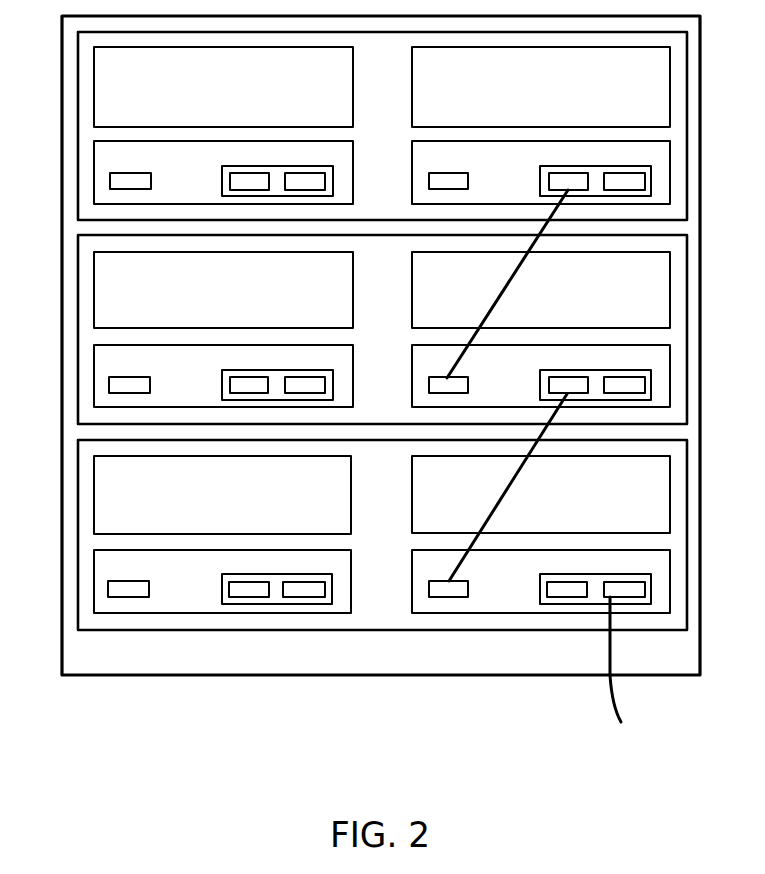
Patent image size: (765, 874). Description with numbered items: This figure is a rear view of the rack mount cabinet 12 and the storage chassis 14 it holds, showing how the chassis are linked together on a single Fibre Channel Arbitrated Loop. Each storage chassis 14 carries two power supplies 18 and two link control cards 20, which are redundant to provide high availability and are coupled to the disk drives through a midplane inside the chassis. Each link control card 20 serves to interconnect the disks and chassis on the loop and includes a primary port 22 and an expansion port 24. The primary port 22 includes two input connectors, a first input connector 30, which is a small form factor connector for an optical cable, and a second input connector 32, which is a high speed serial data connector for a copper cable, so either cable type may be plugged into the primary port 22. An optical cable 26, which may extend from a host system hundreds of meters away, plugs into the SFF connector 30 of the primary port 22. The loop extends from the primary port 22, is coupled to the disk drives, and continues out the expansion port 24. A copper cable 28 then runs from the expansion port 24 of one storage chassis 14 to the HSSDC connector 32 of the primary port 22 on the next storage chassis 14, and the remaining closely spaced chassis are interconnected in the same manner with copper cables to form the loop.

The rack mount cabinet 12 is at (62, 178).
The storage chassis 14 is at (78, 383).
The power supply 18 is at (94, 490).
The link control card 20 is at (94, 580).
The primary port 22 is at (222, 383).
The expansion port 24 is at (128, 377).
The cable 26 is at (617, 710).
The cable 28 is at (508, 281).
The first input connector 30 is at (305, 377).
The second input connector 32 is at (248, 377).